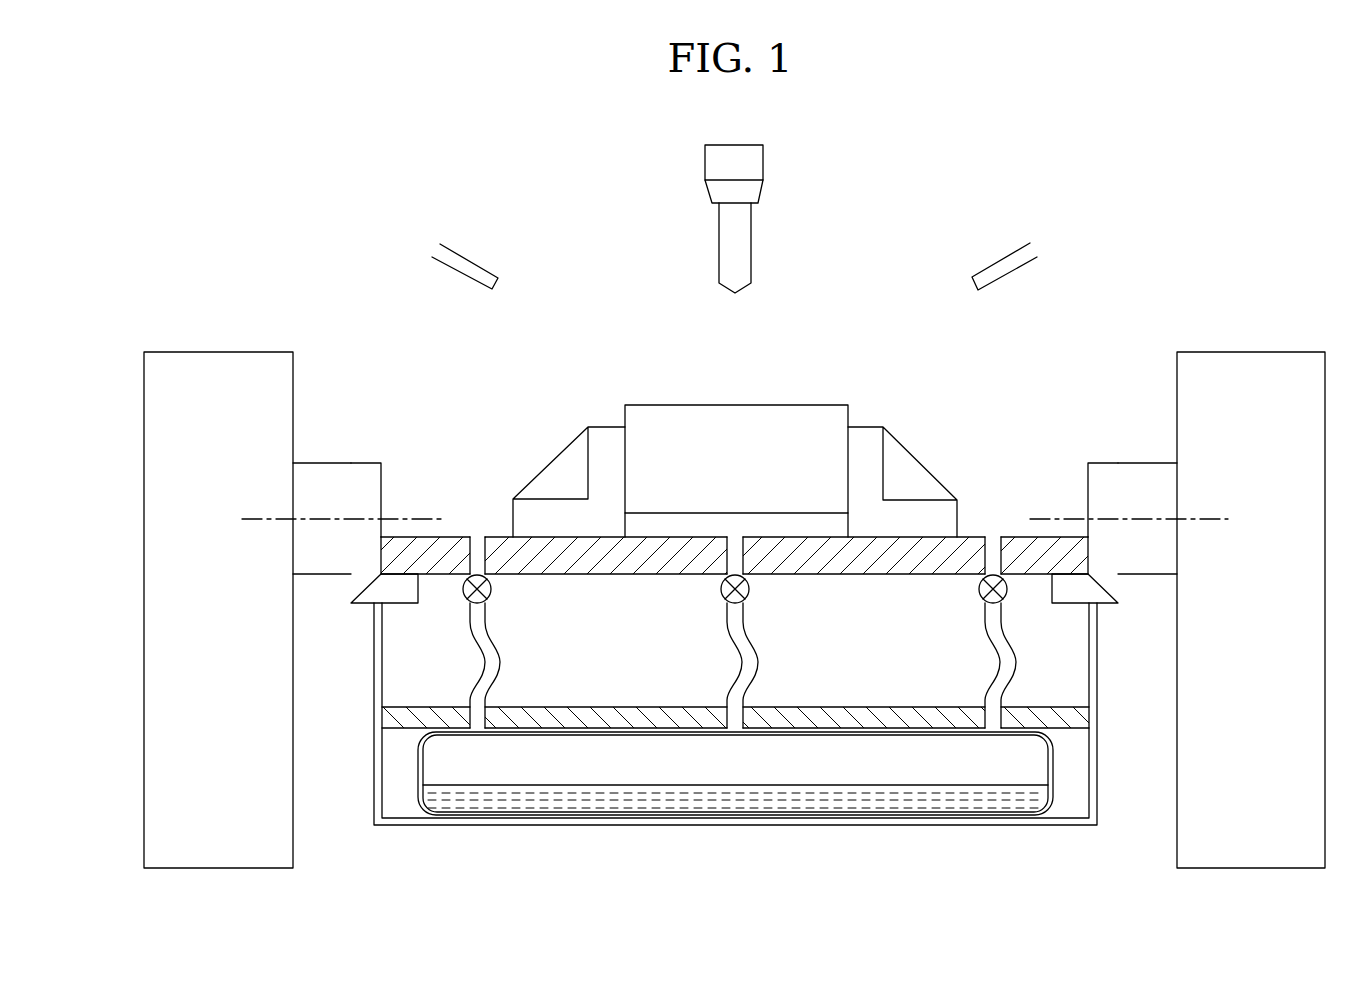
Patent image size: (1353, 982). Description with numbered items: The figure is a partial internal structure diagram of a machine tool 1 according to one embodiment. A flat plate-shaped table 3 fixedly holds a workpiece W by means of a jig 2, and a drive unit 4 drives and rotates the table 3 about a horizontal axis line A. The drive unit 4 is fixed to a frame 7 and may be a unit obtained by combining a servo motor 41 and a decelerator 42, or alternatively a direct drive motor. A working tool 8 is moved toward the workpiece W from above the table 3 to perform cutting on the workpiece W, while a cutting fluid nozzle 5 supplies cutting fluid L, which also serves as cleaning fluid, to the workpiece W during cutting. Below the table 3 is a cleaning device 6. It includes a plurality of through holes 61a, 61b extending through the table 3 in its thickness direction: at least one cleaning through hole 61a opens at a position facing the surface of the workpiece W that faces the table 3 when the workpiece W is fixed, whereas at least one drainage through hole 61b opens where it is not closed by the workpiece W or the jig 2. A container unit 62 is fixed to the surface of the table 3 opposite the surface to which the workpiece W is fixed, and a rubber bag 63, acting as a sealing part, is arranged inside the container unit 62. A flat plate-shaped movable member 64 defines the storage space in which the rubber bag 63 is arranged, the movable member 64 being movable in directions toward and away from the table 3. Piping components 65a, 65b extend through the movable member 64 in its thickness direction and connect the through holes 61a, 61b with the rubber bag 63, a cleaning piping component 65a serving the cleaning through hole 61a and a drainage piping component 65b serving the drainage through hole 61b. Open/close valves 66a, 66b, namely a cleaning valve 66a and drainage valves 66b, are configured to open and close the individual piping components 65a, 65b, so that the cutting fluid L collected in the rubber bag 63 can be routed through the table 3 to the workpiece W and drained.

The machine tool 1 is at (344, 185).
The jig 2 is at (600, 427).
The table 3 is at (450, 526).
The drive unit 4 is at (310, 430).
The servo motor 41 is at (218, 352).
The decelerator 42 is at (324, 580).
The cutting fluid nozzle 5 is at (467, 258).
The cleaning device 6 is at (851, 840).
The cleaning through hole 61a is at (735, 550).
The drainage through hole 61b is at (480, 550).
The container unit 62 is at (1098, 777).
The rubber bag 63 is at (416, 775).
The movable member 64 is at (590, 707).
The cleaning piping component 65a is at (760, 652).
The drainage piping component 65b is at (486, 654).
The cleaning valve 66a is at (720, 590).
The drainage valve 66b is at (492, 592).
The frame 7 is at (368, 463).
The working tool 8 is at (752, 235).
The workpiece W is at (672, 405).
The horizontal axis line A is at (254, 519).
The cutting fluid L is at (680, 785).